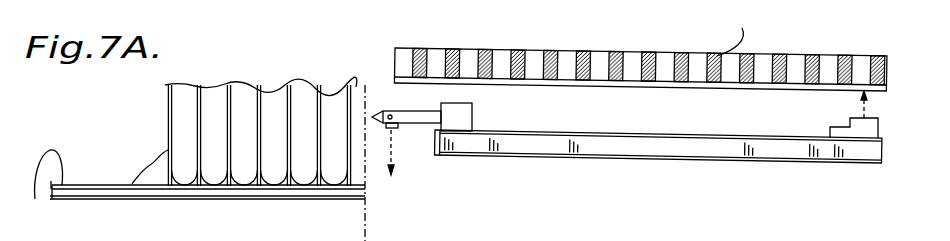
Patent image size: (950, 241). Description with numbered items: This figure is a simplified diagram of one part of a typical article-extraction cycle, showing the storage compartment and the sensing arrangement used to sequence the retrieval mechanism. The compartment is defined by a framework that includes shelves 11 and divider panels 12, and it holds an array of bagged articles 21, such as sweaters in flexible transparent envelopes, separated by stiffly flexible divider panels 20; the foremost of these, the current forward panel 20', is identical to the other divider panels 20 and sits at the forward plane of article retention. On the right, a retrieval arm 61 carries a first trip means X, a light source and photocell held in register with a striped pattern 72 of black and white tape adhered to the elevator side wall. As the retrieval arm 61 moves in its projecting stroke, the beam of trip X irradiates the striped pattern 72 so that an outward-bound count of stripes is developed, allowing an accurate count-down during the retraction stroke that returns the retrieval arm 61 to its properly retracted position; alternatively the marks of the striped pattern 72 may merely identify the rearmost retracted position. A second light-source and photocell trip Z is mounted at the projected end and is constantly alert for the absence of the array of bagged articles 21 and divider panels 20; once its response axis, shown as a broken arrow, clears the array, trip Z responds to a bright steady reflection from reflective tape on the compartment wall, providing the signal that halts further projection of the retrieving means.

The shelves 11 is at (135, 173).
The divider panels 12 is at (296, 200).
The divider panels 20 is at (310, 114).
The current forward panel 20' is at (349, 138).
The bagged articles 21 is at (212, 92).
The retrieval arm 61 is at (575, 155).
The striped pattern 72 is at (568, 85).
The trip means X is at (863, 135).
The light-source and photocell trip Z is at (402, 124).